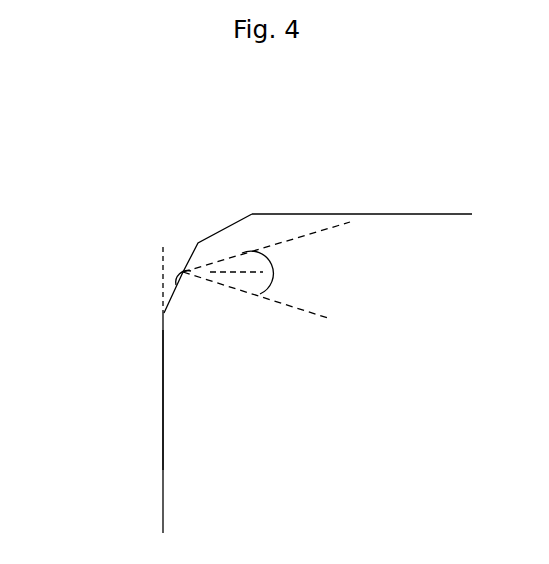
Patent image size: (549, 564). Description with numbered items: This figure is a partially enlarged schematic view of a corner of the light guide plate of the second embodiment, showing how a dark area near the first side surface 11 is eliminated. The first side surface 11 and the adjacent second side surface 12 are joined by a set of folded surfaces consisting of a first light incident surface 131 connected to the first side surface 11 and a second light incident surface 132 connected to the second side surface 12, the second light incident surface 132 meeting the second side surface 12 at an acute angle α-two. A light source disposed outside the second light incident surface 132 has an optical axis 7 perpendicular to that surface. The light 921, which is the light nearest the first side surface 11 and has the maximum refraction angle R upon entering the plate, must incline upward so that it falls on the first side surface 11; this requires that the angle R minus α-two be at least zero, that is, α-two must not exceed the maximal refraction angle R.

The first side surface 11 is at (412, 214).
The second side surface 12 is at (161, 470).
The first light incident surface 131 is at (193, 246).
The second light incident surface 132 is at (167, 311).
The light 921 is at (294, 238).
The optical axis 7 is at (309, 313).
The maximal refraction angle R is at (295, 303).